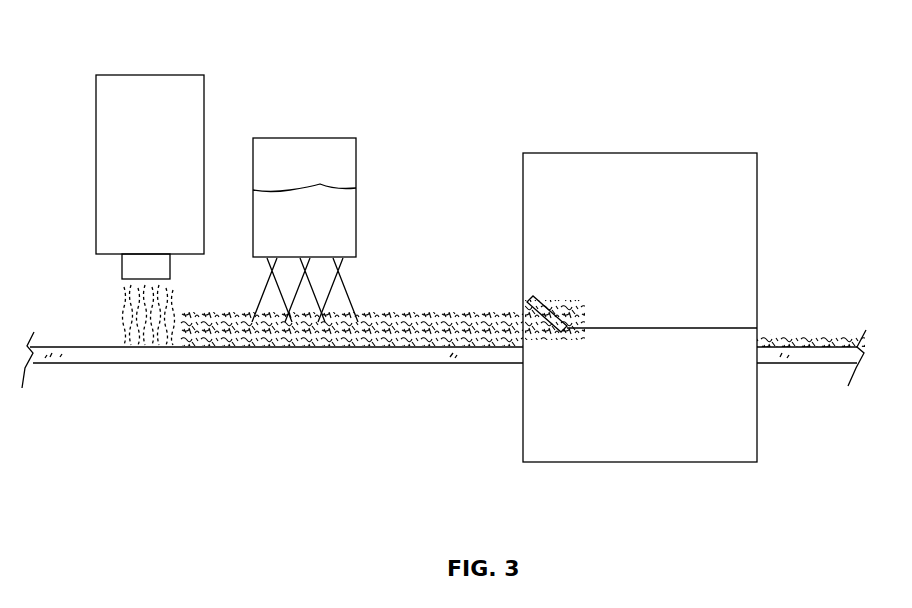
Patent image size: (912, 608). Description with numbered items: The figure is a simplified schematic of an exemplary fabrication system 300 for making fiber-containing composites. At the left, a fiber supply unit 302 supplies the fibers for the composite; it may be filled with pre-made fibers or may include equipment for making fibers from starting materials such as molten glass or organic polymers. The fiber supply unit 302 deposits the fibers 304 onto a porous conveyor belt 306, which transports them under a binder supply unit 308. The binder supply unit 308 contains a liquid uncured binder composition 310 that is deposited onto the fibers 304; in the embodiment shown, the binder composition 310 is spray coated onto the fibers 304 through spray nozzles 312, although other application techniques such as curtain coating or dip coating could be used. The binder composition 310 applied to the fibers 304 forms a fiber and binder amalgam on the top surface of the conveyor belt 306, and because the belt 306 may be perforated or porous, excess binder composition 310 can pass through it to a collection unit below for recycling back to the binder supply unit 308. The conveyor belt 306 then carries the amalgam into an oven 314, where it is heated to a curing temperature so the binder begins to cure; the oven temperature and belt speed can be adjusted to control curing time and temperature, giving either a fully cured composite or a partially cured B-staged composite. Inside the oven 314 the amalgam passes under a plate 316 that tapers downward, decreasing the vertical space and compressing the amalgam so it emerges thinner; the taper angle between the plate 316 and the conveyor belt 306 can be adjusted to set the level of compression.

The fabrication system 300 is at (101, 55).
The fiber supply unit 302 is at (205, 112).
The fibers 304 is at (106, 305).
The porous conveyor belt 306 is at (131, 365).
The binder supply unit 308 is at (357, 162).
The binder composition 310 is at (341, 228).
The spray nozzles 312 is at (348, 268).
The oven 314 is at (758, 193).
The plate 316 is at (560, 308).